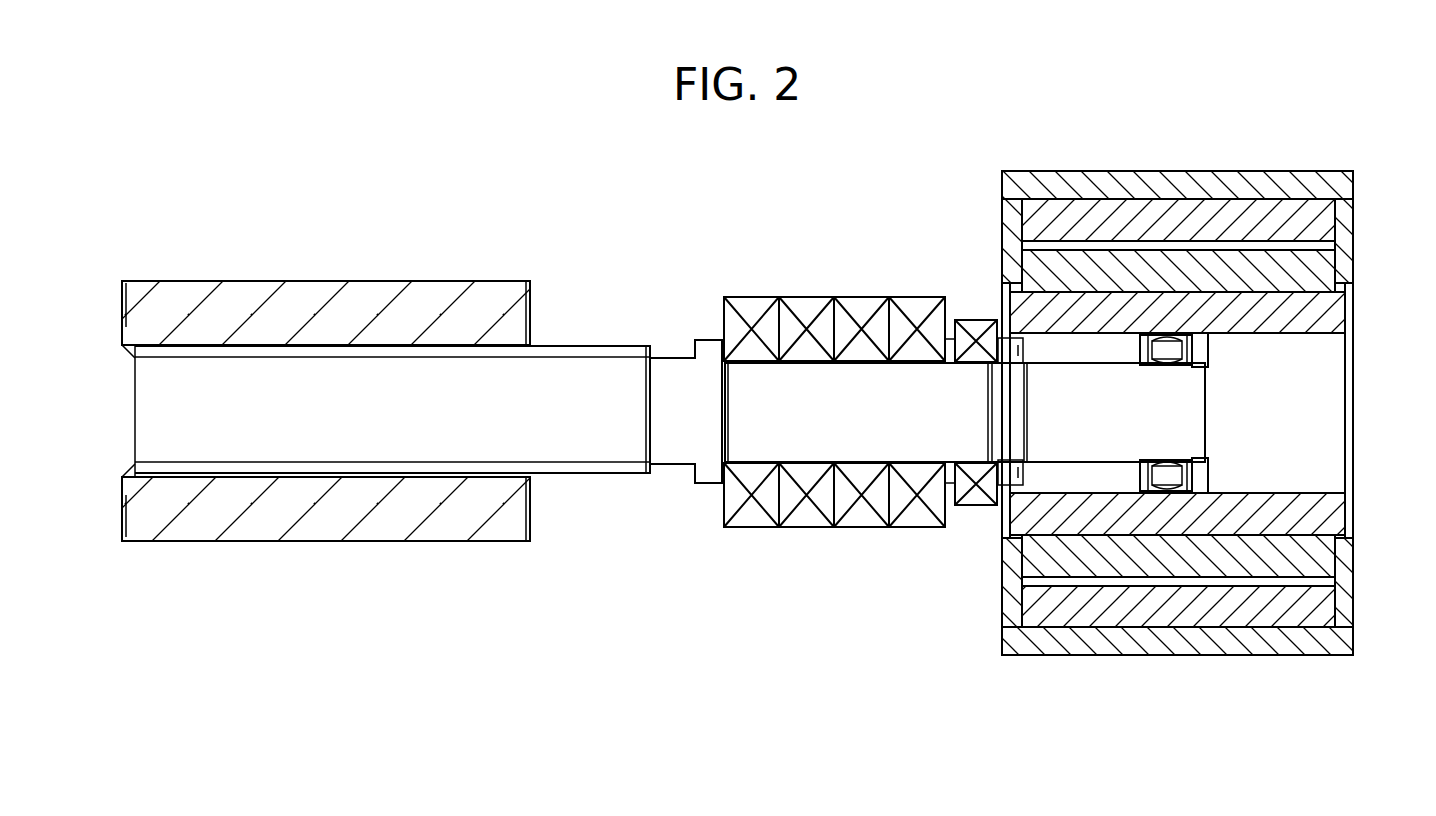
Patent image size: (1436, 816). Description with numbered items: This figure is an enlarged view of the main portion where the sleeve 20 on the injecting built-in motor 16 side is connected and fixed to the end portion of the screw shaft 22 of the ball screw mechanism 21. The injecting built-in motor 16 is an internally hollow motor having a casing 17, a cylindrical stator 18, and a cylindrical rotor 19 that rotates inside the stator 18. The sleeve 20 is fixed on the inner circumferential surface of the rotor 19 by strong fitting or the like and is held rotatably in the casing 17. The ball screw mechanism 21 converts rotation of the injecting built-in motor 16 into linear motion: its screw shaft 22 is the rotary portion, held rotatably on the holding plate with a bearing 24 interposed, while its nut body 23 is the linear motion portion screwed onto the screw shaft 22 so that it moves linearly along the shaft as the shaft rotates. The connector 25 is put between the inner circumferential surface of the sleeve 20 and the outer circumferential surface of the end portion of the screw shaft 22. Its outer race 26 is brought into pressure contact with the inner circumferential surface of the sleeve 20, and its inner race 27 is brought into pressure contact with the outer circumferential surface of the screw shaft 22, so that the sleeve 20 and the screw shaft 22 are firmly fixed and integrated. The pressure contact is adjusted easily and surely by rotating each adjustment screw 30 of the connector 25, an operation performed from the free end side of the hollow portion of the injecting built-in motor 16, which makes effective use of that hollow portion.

The injecting built-in motor 16 is at (1032, 74).
The casing 17 is at (1063, 176).
The stator 18 is at (1148, 208).
The rotor 19 is at (1230, 263).
The sleeve 20 is at (1303, 307).
The ball screw mechanism 21 is at (423, 194).
The screw shaft 22 is at (594, 366).
The nut body 23 is at (455, 286).
The bearing 24 is at (820, 297).
The connector 25 is at (1134, 474).
The outer race 26 is at (1168, 490).
The inner race 27 is at (1168, 466).
The adjustment screw 30 is at (1207, 481).